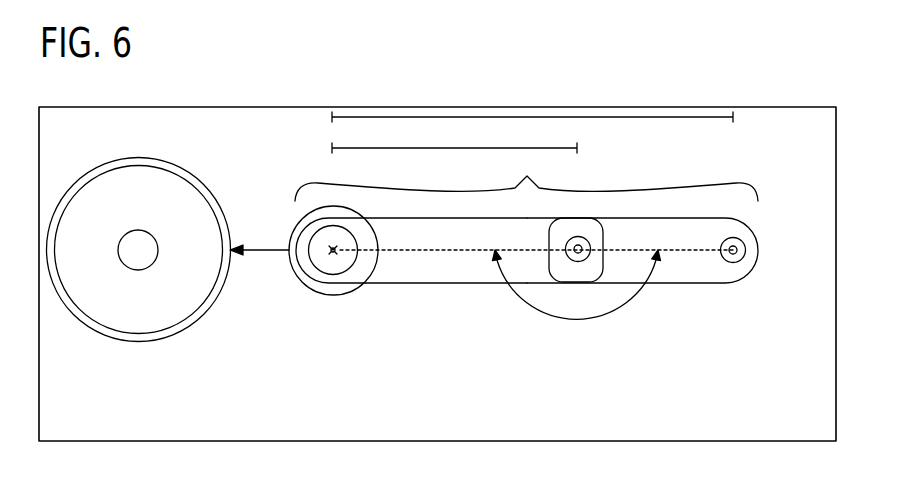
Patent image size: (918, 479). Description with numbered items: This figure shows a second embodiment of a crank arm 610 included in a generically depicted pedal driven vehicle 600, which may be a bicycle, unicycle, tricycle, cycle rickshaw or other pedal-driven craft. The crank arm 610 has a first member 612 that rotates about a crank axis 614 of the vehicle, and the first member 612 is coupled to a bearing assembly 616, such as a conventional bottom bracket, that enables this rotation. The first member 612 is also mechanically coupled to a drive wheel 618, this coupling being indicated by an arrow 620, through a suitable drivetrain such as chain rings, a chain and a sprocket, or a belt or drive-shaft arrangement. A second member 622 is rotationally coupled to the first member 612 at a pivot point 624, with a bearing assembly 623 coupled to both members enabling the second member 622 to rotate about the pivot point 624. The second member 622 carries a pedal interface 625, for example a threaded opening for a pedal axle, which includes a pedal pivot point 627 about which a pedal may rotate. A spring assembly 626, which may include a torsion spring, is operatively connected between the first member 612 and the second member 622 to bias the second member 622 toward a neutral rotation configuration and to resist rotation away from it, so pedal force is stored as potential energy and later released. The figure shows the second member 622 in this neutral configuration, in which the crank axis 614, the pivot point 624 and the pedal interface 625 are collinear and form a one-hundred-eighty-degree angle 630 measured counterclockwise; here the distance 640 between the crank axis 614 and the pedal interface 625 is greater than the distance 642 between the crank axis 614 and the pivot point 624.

The pedal driven vehicle 600 is at (52, 107).
The crank arm 610 is at (526, 179).
The first member 612 is at (426, 218).
The crank axis 614 is at (338, 249).
The bearing assembly 616 is at (353, 211).
The drive wheel 618 is at (175, 163).
The arrow 620 is at (283, 249).
The second member 622 is at (673, 218).
The bearing assembly 623 is at (565, 243).
The pivot point 624 is at (586, 254).
The pedal interface 625 is at (746, 250).
The spring assembly 626 is at (603, 229).
The pedal pivot point 627 is at (727, 243).
The angle 630 is at (577, 320).
The distance between the crank axis and the pedal interface 640 is at (378, 147).
The distance between the crank axis and the member pivot point 642 is at (420, 118).